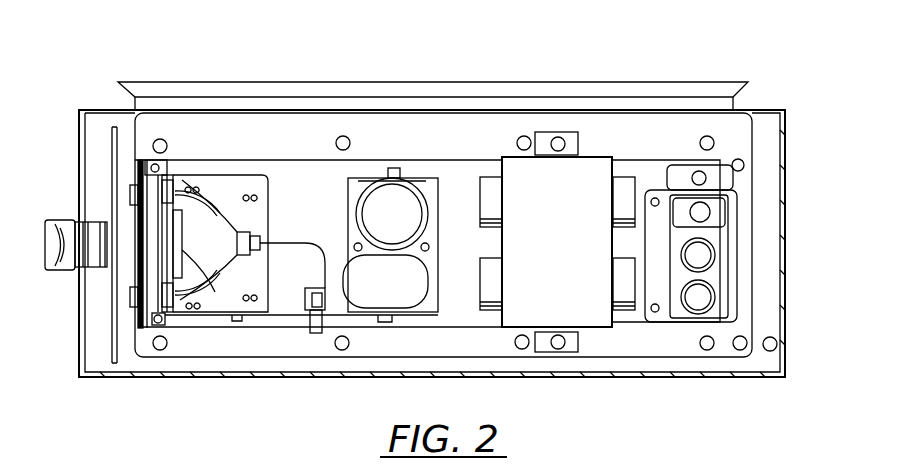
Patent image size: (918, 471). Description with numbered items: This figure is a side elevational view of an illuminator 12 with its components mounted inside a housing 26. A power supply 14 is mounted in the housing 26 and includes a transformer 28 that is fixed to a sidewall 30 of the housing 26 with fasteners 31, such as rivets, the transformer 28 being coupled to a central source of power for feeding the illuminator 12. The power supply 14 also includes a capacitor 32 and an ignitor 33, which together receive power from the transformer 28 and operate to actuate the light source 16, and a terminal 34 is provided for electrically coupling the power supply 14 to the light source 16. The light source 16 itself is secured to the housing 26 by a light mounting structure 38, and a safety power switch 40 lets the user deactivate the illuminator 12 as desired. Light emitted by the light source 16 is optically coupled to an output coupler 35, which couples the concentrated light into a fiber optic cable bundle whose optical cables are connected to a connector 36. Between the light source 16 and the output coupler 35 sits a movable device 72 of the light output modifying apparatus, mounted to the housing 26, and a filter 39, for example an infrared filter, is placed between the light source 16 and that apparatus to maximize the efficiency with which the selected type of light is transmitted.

The illuminator 12 is at (712, 72).
The power supply 14 is at (455, 160).
The light source 16 is at (222, 213).
The housing 26 is at (763, 110).
The transformer 28 is at (502, 162).
The sidewall 30 is at (652, 127).
The fasteners 31 is at (560, 137).
The capacitor 32 is at (413, 272).
The ignitor 33 is at (387, 212).
The terminal 34 is at (308, 302).
The output coupler 35 is at (92, 223).
The connector 36 is at (53, 270).
The light mounting structure 38 is at (180, 178).
The filter 39 is at (137, 163).
The safety power switch 40 is at (700, 212).
The movable device 72 is at (112, 152).